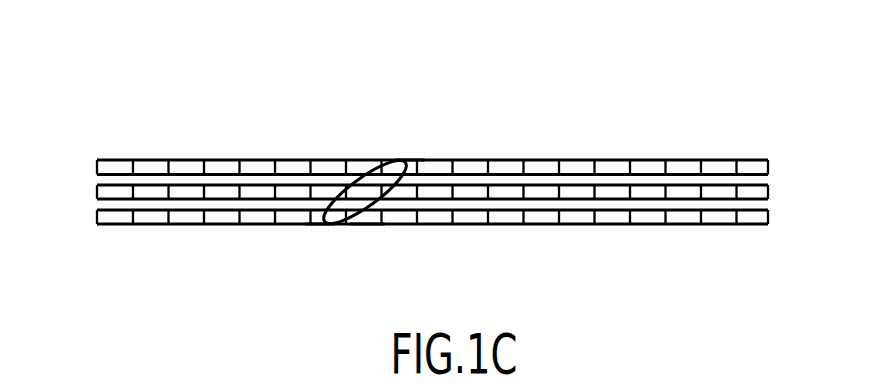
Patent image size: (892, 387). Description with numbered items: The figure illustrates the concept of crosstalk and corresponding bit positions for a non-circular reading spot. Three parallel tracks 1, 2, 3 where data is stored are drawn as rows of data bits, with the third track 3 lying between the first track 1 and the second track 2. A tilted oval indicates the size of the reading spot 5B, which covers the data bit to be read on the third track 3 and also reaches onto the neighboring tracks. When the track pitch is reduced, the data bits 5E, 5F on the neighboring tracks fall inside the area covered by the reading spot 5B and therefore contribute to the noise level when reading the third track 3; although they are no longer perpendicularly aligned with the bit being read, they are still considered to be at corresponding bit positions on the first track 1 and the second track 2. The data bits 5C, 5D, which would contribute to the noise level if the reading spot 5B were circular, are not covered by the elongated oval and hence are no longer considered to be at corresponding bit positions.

The first track 1 is at (773, 220).
The second track 2 is at (773, 158).
The third track 3 is at (775, 190).
The reading spot 5B is at (342, 178).
The data bit 5C is at (362, 153).
The data bit 5D is at (367, 230).
The data bit 5E is at (413, 156).
The data bit 5F is at (317, 230).